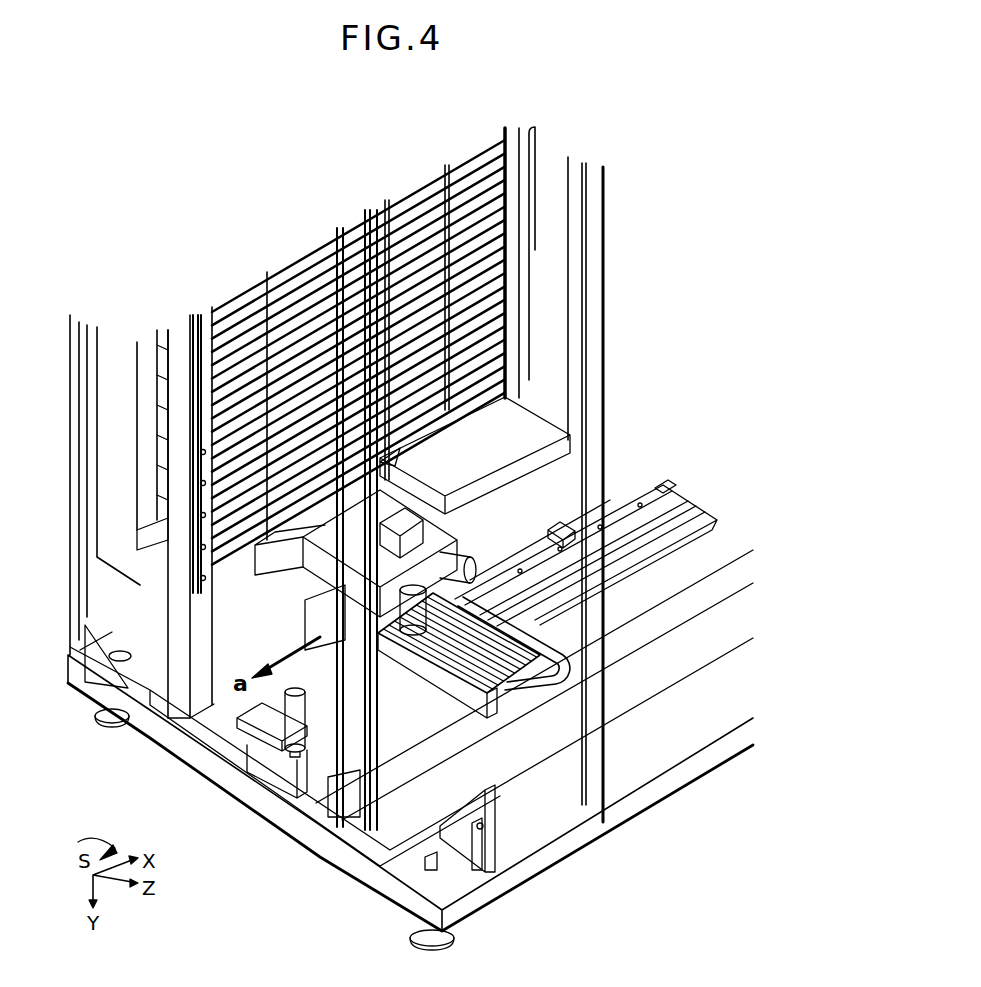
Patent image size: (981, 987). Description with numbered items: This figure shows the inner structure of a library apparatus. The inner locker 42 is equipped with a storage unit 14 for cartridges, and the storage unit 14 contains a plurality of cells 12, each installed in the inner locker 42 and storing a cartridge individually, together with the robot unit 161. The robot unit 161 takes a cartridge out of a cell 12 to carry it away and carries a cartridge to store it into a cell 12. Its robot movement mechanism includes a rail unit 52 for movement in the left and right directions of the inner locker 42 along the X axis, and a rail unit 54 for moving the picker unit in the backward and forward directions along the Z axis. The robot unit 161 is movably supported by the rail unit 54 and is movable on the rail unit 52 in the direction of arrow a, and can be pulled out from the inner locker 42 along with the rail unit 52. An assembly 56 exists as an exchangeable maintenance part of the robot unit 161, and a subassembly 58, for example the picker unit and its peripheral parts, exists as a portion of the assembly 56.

The cell 12 is at (479, 163).
The storage unit 14 is at (535, 252).
The inner locker 42 is at (703, 778).
The rail unit 52 is at (413, 692).
The rail unit 54 is at (512, 692).
The assembly 56 is at (503, 708).
The subassembly 58 is at (303, 572).
The robot unit 161 is at (448, 692).